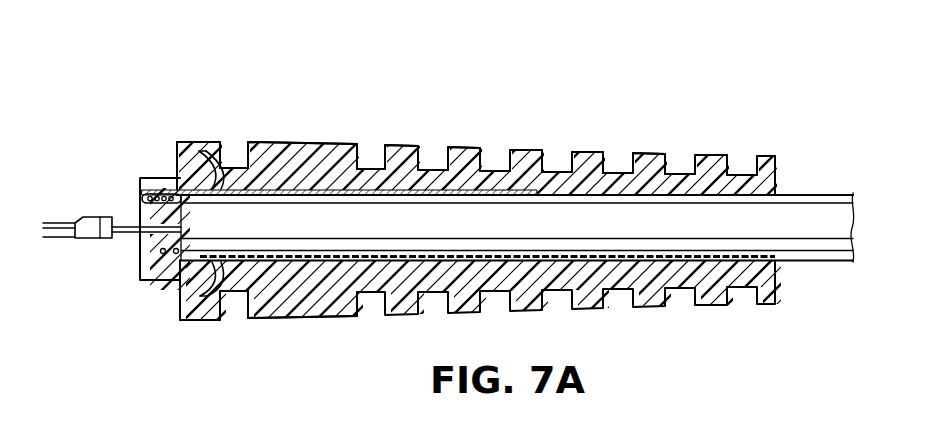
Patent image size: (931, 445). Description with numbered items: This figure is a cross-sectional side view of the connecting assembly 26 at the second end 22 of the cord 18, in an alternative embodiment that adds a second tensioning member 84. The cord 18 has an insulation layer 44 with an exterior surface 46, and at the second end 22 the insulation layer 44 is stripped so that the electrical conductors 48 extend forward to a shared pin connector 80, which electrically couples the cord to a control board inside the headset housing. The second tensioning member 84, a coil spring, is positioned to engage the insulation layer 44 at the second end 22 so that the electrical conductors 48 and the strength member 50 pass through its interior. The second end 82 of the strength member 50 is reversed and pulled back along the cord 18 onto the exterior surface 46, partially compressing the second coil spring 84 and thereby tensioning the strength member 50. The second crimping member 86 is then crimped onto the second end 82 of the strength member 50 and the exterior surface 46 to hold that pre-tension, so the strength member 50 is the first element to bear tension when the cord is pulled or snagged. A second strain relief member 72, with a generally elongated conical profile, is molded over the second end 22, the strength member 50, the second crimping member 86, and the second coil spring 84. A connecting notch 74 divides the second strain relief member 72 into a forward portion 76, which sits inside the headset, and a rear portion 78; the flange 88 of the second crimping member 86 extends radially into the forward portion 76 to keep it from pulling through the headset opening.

The cord 18 is at (733, 215).
The second end of the cord 22 is at (158, 240).
The connecting assembly 26 is at (570, 101).
The insulation layer 44 is at (813, 196).
The exterior surface of the insulation layer 46 is at (653, 238).
The electrical conductors 48 is at (120, 226).
The strength member 50 is at (153, 192).
The second strain relief member 72 is at (355, 141).
The connecting notch 74 is at (231, 167).
The forward portion 76 is at (180, 321).
The rear portion 78 is at (342, 313).
The shared pin connector 80 is at (90, 217).
The second end of the strength member 82 is at (497, 188).
The second tensioning member 84 is at (158, 274).
The second crimping member 86 is at (263, 262).
The flange 88 is at (225, 292).